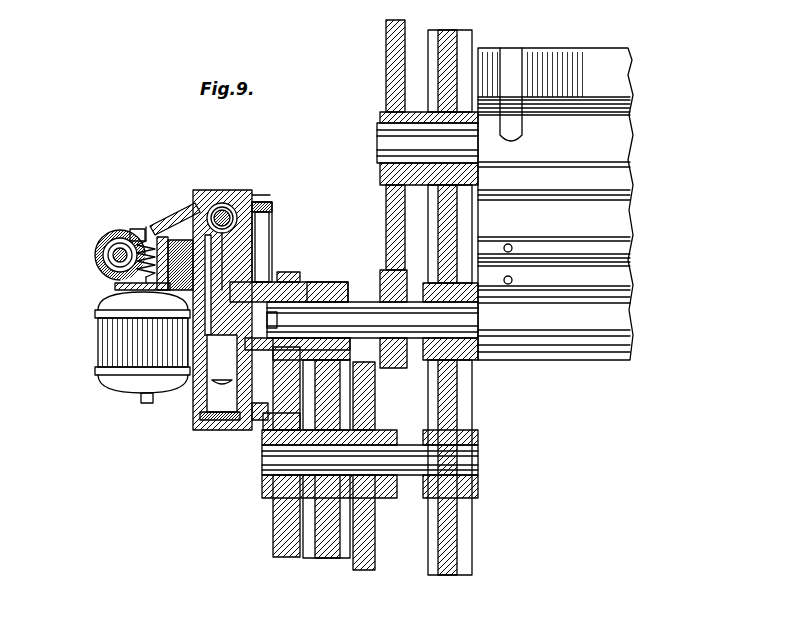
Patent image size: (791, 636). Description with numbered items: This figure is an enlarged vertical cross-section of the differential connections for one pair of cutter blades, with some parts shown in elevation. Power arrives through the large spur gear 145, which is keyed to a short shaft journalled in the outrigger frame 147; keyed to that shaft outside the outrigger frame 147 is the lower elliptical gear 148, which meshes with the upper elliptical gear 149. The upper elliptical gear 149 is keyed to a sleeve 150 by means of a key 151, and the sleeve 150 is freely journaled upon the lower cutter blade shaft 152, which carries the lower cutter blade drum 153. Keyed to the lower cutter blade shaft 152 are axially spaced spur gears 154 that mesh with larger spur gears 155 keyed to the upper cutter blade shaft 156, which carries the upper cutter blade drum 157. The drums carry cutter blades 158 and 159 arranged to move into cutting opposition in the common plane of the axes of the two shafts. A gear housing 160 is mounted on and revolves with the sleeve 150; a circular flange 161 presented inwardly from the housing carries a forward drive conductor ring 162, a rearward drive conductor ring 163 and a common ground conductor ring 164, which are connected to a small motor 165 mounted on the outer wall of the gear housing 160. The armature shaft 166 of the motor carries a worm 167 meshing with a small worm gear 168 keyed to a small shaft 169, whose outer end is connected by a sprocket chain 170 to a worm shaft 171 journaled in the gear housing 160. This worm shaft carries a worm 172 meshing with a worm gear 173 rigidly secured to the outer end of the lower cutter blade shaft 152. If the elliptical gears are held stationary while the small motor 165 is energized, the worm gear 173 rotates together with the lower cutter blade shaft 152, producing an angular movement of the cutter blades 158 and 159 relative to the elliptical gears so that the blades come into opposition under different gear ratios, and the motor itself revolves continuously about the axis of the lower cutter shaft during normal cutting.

The large spur gear 145 is at (362, 560).
The outrigger frame 147 is at (328, 552).
The lower elliptical gear 148 is at (275, 525).
The upper elliptical gear 149 is at (296, 280).
The sleeve 150 is at (335, 290).
The key 151 is at (280, 320).
The lower cutter blade shaft 152 is at (372, 320).
The lower cutter blade drum 153 is at (620, 316).
The spur gears 154 is at (396, 370).
The larger spur gears 155 is at (395, 100).
The upper cutter blade shaft 156 is at (385, 138).
The upper cutter blade drum 157 is at (612, 146).
The cutter blade 158 is at (600, 50).
The cutter blade 159 is at (612, 277).
The gear housing 160 is at (240, 190).
The circular flange 161 is at (226, 420).
The forward drive conductor ring 162 is at (273, 207).
The rearward drive conductor ring 163 is at (273, 204).
The common ground conductor ring 164 is at (256, 205).
The small motor 165 is at (120, 335).
The armature shaft 166 is at (147, 228).
The worm 167 is at (137, 240).
The small worm gear 168 is at (101, 240).
The small shaft 169 is at (114, 256).
The sprocket chain 170 is at (178, 215).
The worm shaft 171 is at (222, 206).
The worm 172 is at (240, 230).
The worm gear 173 is at (200, 395).